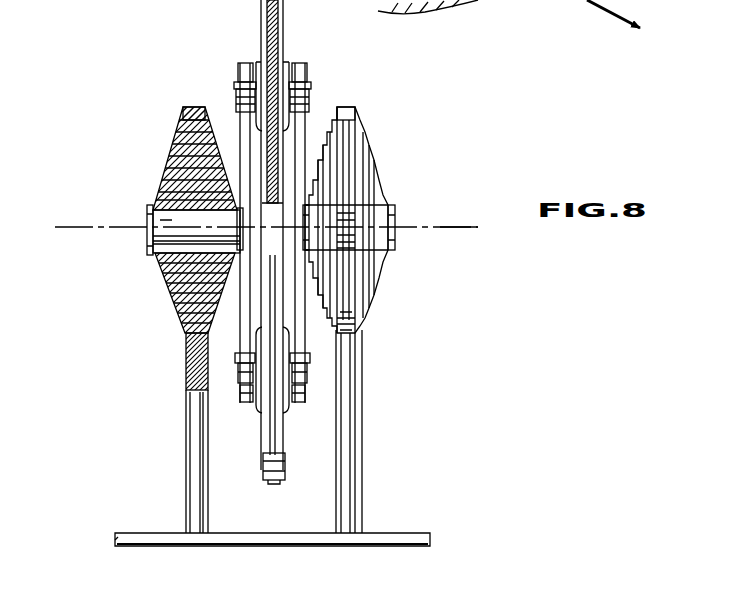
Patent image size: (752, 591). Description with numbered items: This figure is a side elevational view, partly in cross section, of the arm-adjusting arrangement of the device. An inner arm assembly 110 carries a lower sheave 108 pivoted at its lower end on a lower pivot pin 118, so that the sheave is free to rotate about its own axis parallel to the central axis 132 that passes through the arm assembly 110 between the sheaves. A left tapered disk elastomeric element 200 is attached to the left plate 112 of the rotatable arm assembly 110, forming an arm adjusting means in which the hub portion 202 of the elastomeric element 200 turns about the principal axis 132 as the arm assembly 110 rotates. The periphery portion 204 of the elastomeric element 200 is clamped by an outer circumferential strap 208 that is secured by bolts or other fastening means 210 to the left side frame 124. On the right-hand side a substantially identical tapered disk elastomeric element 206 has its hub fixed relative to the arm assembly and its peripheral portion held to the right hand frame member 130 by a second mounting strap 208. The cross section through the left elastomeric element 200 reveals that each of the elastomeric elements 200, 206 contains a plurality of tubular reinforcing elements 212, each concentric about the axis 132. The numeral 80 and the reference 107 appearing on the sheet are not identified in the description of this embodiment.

The drive arrow/element of adjacent figure 80 is at (538, 0).
The left tapered disk elastomeric element 200 is at (150, 142).
The hub portion 202 is at (160, 218).
The periphery portion 204 is at (182, 122).
The tapered disk elastomeric element 206 is at (386, 168).
The outer circumferential strap 208 is at (192, 105).
The fastening means 210 is at (352, 310).
The tubular reinforcing elements 212 is at (168, 172).
The shaft 107 is at (283, 12).
The lower sheave 108 is at (288, 458).
The inner arm assembly 110 is at (321, 100).
The left plate 112 is at (245, 62).
The lower pivot pin 118 is at (312, 363).
The left side frame 124 is at (185, 476).
The right hand frame member 130 is at (363, 484).
The central axis 132 is at (464, 231).